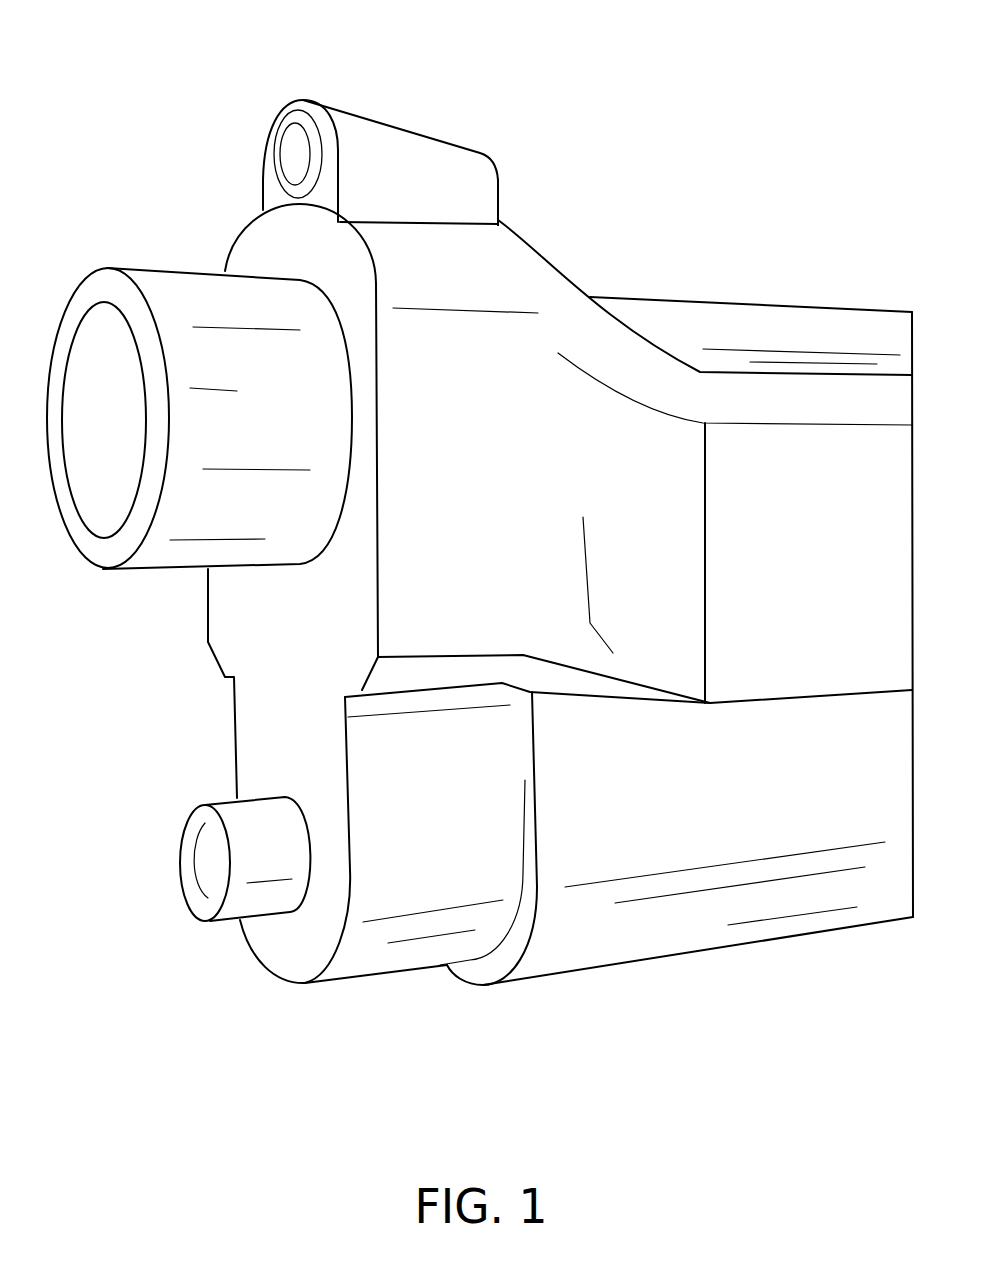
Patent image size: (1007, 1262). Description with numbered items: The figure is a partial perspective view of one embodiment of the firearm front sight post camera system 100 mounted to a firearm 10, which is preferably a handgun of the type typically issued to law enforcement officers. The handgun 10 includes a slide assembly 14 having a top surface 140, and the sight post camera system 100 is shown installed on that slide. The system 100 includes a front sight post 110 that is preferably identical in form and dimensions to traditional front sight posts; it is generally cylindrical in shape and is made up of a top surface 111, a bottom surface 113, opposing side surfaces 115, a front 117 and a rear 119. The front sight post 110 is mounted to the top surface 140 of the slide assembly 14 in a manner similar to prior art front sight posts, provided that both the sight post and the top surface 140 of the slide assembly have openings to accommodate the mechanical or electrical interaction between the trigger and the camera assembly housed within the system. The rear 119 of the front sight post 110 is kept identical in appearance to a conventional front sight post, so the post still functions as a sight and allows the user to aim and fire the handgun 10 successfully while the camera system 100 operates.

The firearm 10 is at (485, 534).
The slide assembly 14 is at (574, 546).
The firearm front sight post camera system 100 is at (437, 140).
The front sight post 110 is at (437, 140).
The top surface 111 is at (373, 121).
The bottom surface 113 is at (440, 228).
The opposing side surfaces 115 is at (455, 183).
The front 117 is at (267, 178).
The rear 119 is at (498, 203).
The top surface 140 is at (713, 300).